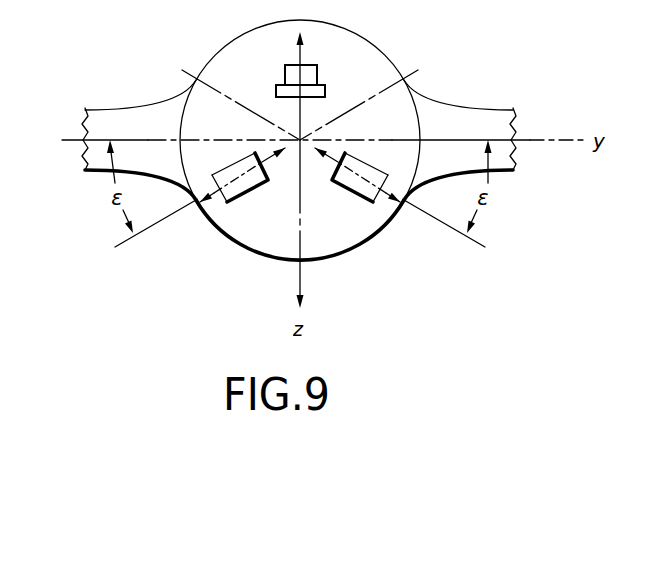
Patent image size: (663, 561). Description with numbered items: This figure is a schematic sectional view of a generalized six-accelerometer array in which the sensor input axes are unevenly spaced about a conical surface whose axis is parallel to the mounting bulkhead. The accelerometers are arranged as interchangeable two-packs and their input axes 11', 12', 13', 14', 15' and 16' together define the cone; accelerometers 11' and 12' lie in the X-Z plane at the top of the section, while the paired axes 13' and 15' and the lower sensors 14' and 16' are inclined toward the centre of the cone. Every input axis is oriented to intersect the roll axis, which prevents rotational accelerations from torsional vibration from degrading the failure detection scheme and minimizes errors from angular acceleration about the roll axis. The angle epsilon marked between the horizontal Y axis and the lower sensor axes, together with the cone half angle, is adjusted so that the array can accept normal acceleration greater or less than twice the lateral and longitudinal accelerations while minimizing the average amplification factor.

The accelerometer input axis 11' is at (304, 66).
The accelerometer input axis 12' is at (314, 66).
The accelerometer input axis 13' is at (352, 175).
The accelerometer input axis 14' is at (240, 190).
The accelerometer input axis 15' is at (251, 175).
The accelerometer input axis 16' is at (360, 190).